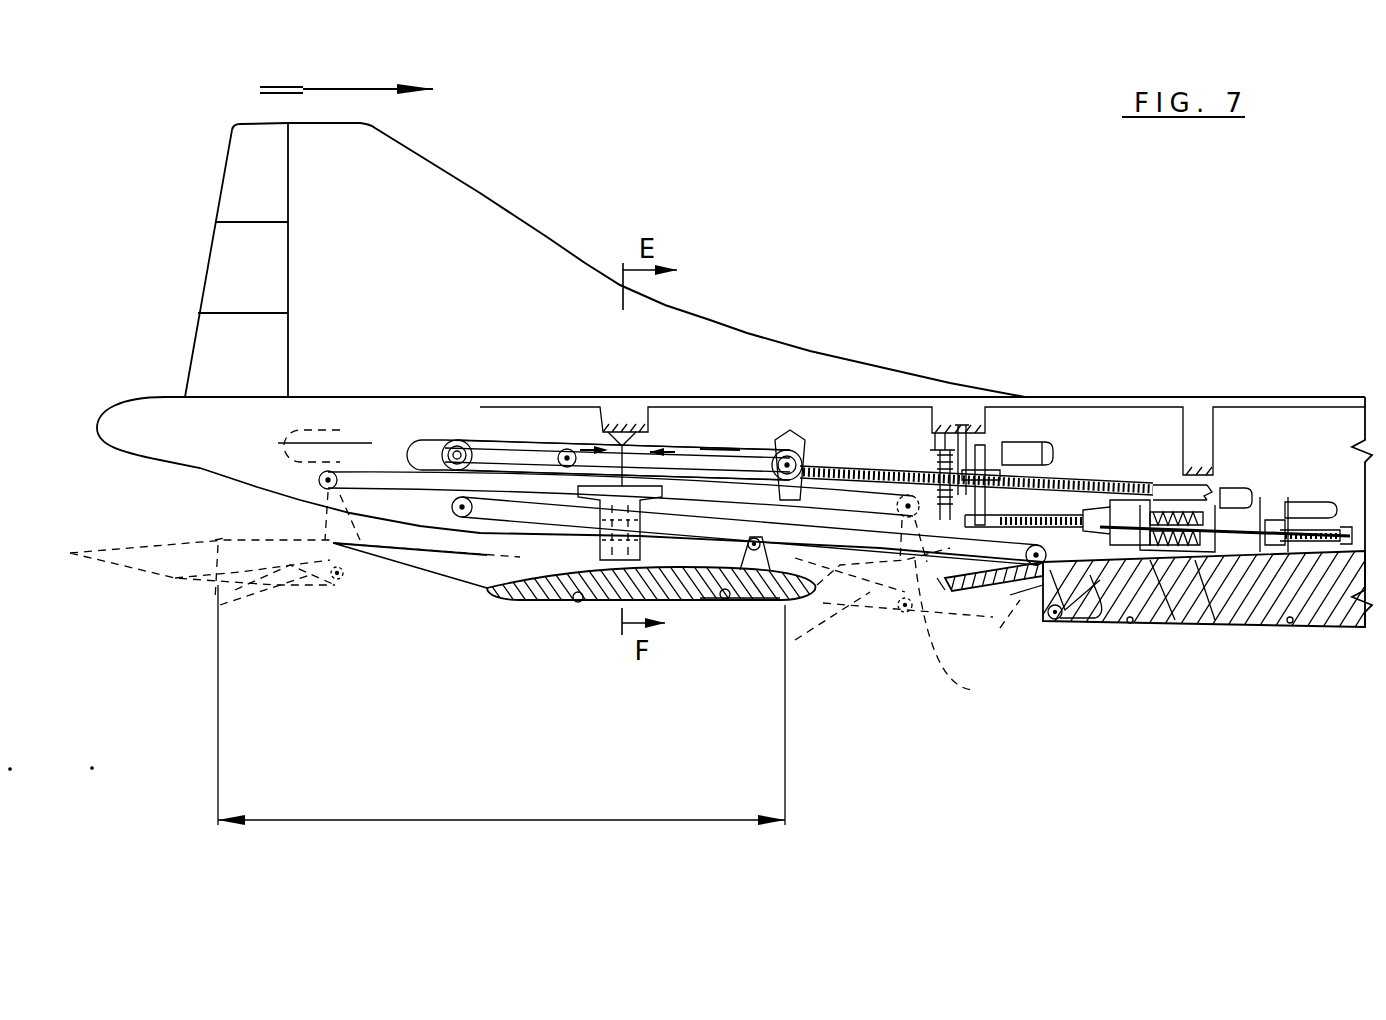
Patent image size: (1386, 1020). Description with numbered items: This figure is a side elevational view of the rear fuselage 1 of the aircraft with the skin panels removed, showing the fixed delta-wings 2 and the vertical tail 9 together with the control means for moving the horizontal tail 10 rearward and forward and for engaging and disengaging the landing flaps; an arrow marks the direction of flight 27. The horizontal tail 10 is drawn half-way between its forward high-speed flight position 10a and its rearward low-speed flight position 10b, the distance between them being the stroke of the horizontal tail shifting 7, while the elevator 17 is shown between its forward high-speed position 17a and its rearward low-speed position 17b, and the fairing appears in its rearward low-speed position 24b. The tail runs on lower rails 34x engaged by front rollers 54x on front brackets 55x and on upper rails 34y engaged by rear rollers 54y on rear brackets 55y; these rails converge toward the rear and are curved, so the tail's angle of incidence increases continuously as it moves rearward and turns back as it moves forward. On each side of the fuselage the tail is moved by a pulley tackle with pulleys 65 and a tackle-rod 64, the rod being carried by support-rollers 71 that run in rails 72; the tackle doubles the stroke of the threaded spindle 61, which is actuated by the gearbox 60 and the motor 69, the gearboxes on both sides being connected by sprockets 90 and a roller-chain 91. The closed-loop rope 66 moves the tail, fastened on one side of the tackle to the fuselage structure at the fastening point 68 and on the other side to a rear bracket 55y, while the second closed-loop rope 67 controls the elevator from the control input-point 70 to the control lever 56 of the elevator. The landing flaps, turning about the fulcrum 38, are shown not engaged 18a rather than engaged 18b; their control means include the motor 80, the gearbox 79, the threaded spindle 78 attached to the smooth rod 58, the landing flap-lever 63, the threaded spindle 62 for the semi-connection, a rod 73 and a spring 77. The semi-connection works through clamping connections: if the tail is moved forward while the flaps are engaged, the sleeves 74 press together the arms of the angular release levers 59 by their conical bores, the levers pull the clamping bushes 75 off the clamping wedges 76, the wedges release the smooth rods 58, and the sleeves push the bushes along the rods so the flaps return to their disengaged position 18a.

The fuselage 1 is at (1096, 410).
The fixed delta-wings 2 is at (1323, 603).
The stroke of the horizontal tail shifting 7 is at (507, 822).
The vertical tail 9 is at (418, 187).
The horizontal tail 10 is at (677, 593).
The horizontal tail in its forward high-speed flight position 10a is at (1022, 618).
The horizontal tail in its rearward low-speed flight position 10b is at (410, 577).
The elevator 17 is at (590, 513).
The elevator in its forward high-speed flight position 17a is at (878, 607).
The elevator in its rearward low-speed flight position 17b is at (275, 585).
The landing flaps not engaged 18a is at (1000, 628).
The landing flaps engaged 18b is at (980, 650).
The fairing in its rearward low-speed flight position 24b is at (175, 578).
The direction of flight 27 is at (346, 77).
The lower rails 34x is at (850, 548).
The upper rails 34y is at (815, 515).
The fulcrum of landing flap 38 is at (1055, 612).
The front rollers 54x is at (725, 593).
The rear rollers 54y is at (578, 600).
The front brackets 55x is at (745, 595).
The rear brackets 55y is at (697, 600).
The control lever of elevator 56 is at (600, 560).
The smooth rod 58 is at (1290, 623).
The angular release levers 59 is at (1143, 515).
The gearbox 60 is at (1015, 450).
The threaded spindle for rearward and forward movement of the horizontal tail 61 is at (880, 470).
The threaded spindle for the semi-connection to the landing flaps 62 is at (1078, 520).
The landing flap-lever 63 is at (1067, 610).
The tackle-rod of the pulley tackle 64 is at (533, 458).
The pulleys 65 is at (458, 441).
The closed-loop rope for rearward and forward movement of the horizontal tail 66 is at (782, 440).
The closed-loop rope for elevator control 67 is at (500, 445).
The fastening point of rope 66 68 is at (623, 445).
The motor for horizontal tail movement 69 is at (1010, 430).
The control input-point for elevator 17 70 is at (720, 450).
The support-rollers on tackle-rod 64 71 is at (567, 458).
The rails for support-rollers 71 72 is at (418, 441).
The rod 73 is at (1130, 623).
The sleeve 74 is at (1163, 623).
The clamping bush 75 is at (1207, 623).
The clamping wedges 76 is at (1173, 520).
The spring 77 is at (1180, 470).
The threaded spindle attached to the smooth rod 58 78 is at (1335, 505).
The gearbox 79 is at (1265, 505).
The motor for engagement and disengagement of the landing flaps 80 is at (1300, 505).
The sprockets on the shafts of motors 69 90 is at (940, 440).
The roller-chain 91 is at (965, 430).